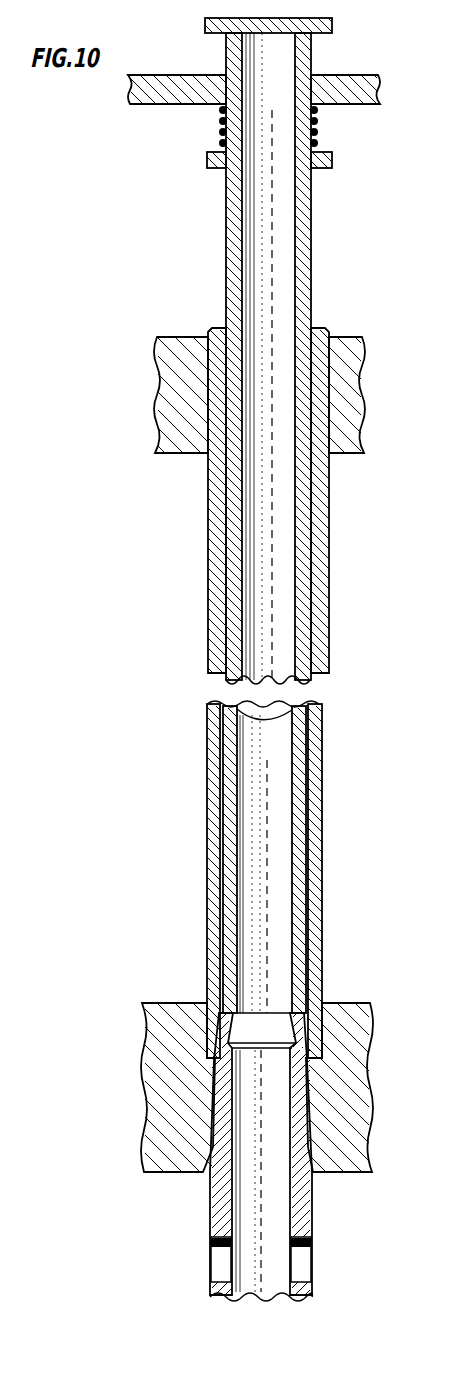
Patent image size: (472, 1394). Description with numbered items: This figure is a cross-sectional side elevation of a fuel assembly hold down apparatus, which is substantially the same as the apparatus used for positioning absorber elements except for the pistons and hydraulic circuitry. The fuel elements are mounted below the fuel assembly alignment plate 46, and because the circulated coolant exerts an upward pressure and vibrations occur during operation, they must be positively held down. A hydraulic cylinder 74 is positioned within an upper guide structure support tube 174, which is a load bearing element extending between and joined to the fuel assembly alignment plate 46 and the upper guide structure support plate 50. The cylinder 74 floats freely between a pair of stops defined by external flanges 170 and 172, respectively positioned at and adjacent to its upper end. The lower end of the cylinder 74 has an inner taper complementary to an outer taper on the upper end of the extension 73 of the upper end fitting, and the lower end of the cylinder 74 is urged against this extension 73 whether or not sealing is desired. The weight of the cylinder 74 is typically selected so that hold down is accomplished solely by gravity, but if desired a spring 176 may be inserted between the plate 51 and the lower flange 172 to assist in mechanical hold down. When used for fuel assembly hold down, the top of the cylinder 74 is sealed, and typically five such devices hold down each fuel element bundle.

The external flange 170 is at (332, 26).
The plate 51 is at (163, 104).
The spring 176 is at (213, 127).
The lower flange 172 is at (332, 160).
The upper guide structure support plate 50 is at (155, 397).
The upper guide structure support tube 174 is at (336, 523).
The hydraulic cylinder 74 is at (225, 888).
The fuel assembly alignment plate 46 is at (153, 1028).
The extension of upper end fitting 73 is at (218, 1100).